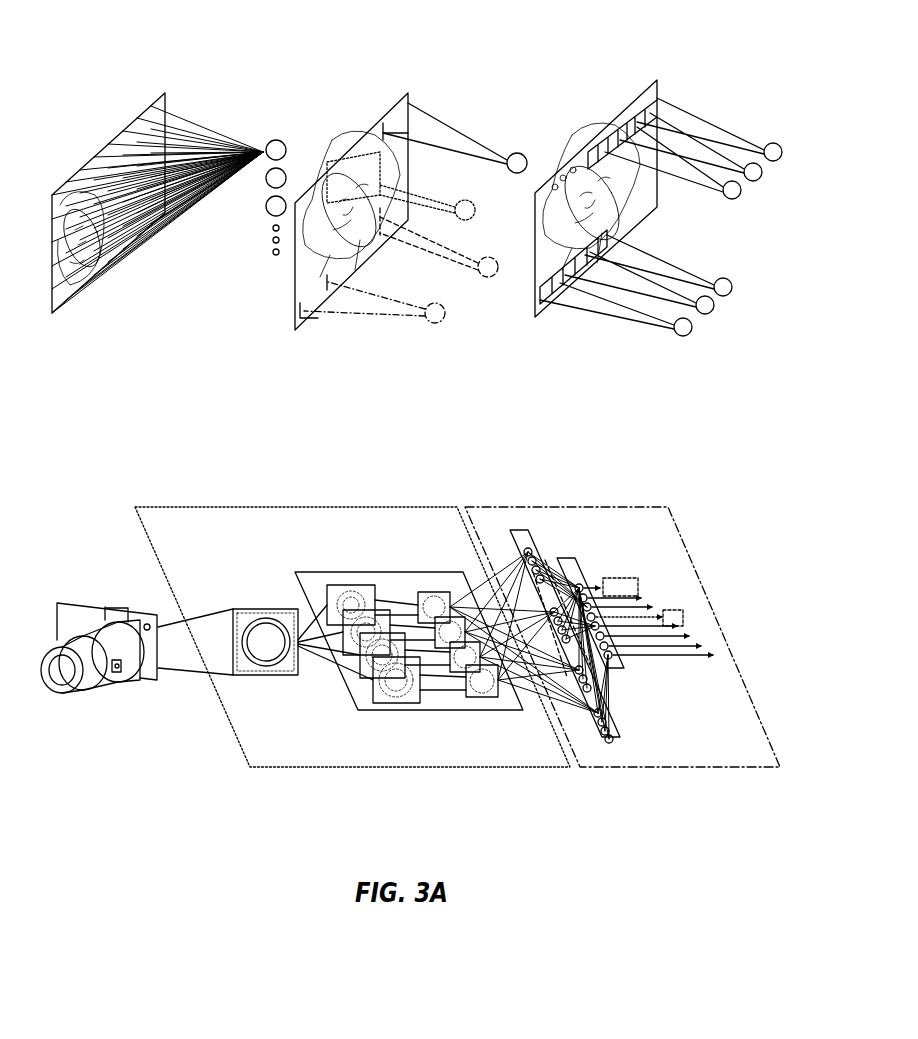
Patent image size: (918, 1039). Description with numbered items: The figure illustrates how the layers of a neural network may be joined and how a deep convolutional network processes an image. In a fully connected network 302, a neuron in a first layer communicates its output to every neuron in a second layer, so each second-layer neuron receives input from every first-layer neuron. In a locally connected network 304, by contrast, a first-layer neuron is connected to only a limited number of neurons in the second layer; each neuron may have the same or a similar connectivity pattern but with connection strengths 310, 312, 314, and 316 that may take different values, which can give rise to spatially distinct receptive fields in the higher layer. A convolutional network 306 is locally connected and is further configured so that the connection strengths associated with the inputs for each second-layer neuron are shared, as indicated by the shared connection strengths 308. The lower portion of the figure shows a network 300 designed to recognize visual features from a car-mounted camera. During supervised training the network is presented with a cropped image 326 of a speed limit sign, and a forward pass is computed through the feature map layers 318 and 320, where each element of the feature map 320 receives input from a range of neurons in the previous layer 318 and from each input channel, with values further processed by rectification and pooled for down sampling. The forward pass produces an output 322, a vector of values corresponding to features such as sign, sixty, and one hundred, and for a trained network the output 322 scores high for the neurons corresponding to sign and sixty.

The network 300 is at (192, 481).
The fully connected network 302 is at (162, 60).
The locally connected network 304 is at (400, 60).
The convolutional network 306 is at (582, 62).
The shared connection strengths 308 is at (697, 182).
The connection strength 310 is at (478, 143).
The connection strength 312 is at (430, 193).
The connection strength 314 is at (452, 263).
The connection strength 316 is at (357, 308).
The feature map layer 318 is at (317, 515).
The feature map layer 320 is at (408, 515).
The output 322 is at (610, 523).
The cropped image 326 is at (260, 605).